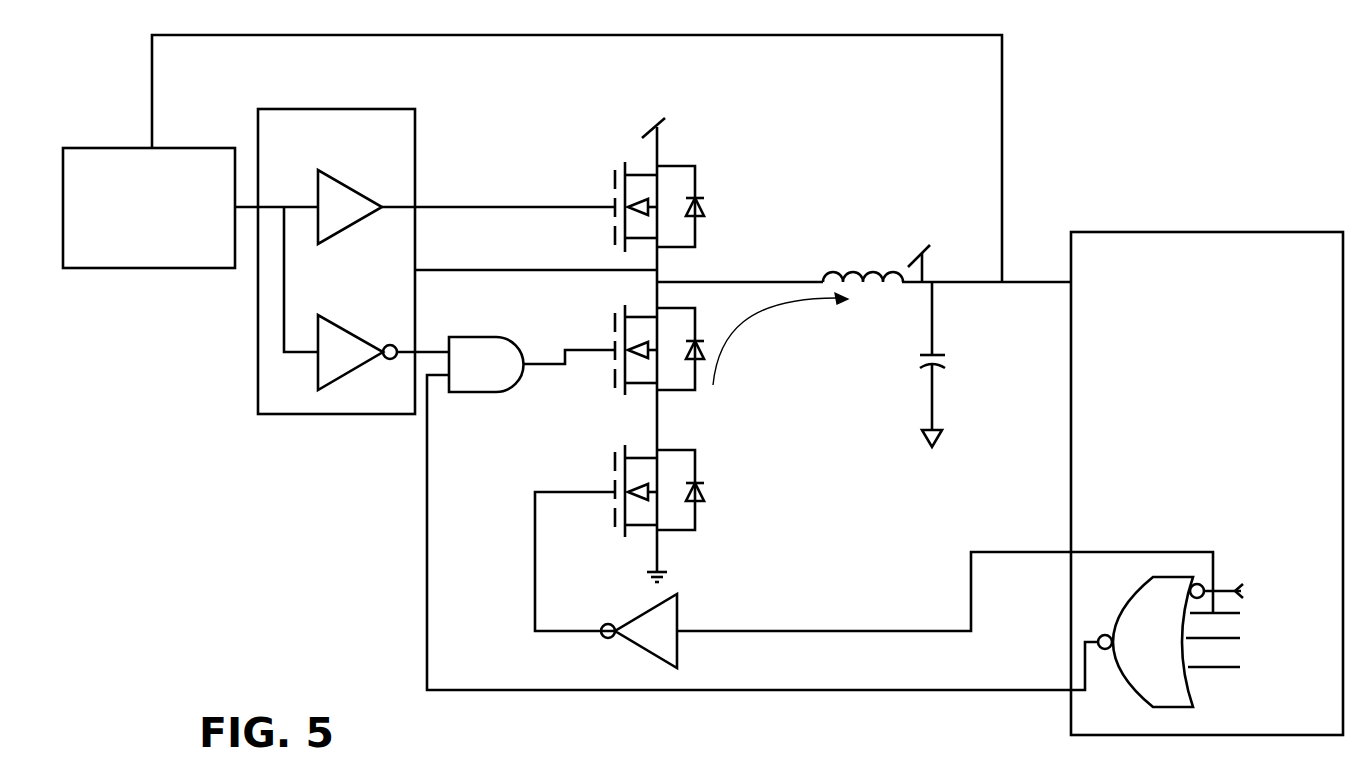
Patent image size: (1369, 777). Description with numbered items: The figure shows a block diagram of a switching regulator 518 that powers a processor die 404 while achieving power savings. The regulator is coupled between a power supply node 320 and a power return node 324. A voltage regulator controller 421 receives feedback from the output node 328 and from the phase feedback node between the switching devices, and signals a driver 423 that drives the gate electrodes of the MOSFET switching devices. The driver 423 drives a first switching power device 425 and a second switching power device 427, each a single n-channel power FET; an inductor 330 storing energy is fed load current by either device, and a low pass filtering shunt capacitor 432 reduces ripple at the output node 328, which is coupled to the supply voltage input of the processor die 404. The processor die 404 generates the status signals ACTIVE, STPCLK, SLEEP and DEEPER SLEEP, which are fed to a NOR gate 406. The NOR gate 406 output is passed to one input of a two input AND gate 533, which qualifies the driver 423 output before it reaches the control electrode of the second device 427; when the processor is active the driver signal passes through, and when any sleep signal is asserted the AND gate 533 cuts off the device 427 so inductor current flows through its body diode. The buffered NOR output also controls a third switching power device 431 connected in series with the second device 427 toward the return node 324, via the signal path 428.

The switching regulator 518 is at (160, 614).
The voltage regulator controller 421 is at (144, 268).
The driver 423 is at (268, 414).
The two input AND gate 533 is at (486, 364).
The power supply node 320 is at (657, 135).
The first switching power device 425 is at (712, 162).
The second switching power device 427 is at (716, 386).
The third switching power device 431 is at (718, 447).
The power return node 324 is at (660, 555).
The inductor 330 is at (843, 260).
The output node 328 is at (1018, 285).
The low pass filtering shunt capacitor 432 is at (948, 363).
The processor die 404 is at (1172, 232).
The NOR gate 406 is at (1170, 642).
The control signal line 428 is at (830, 630).